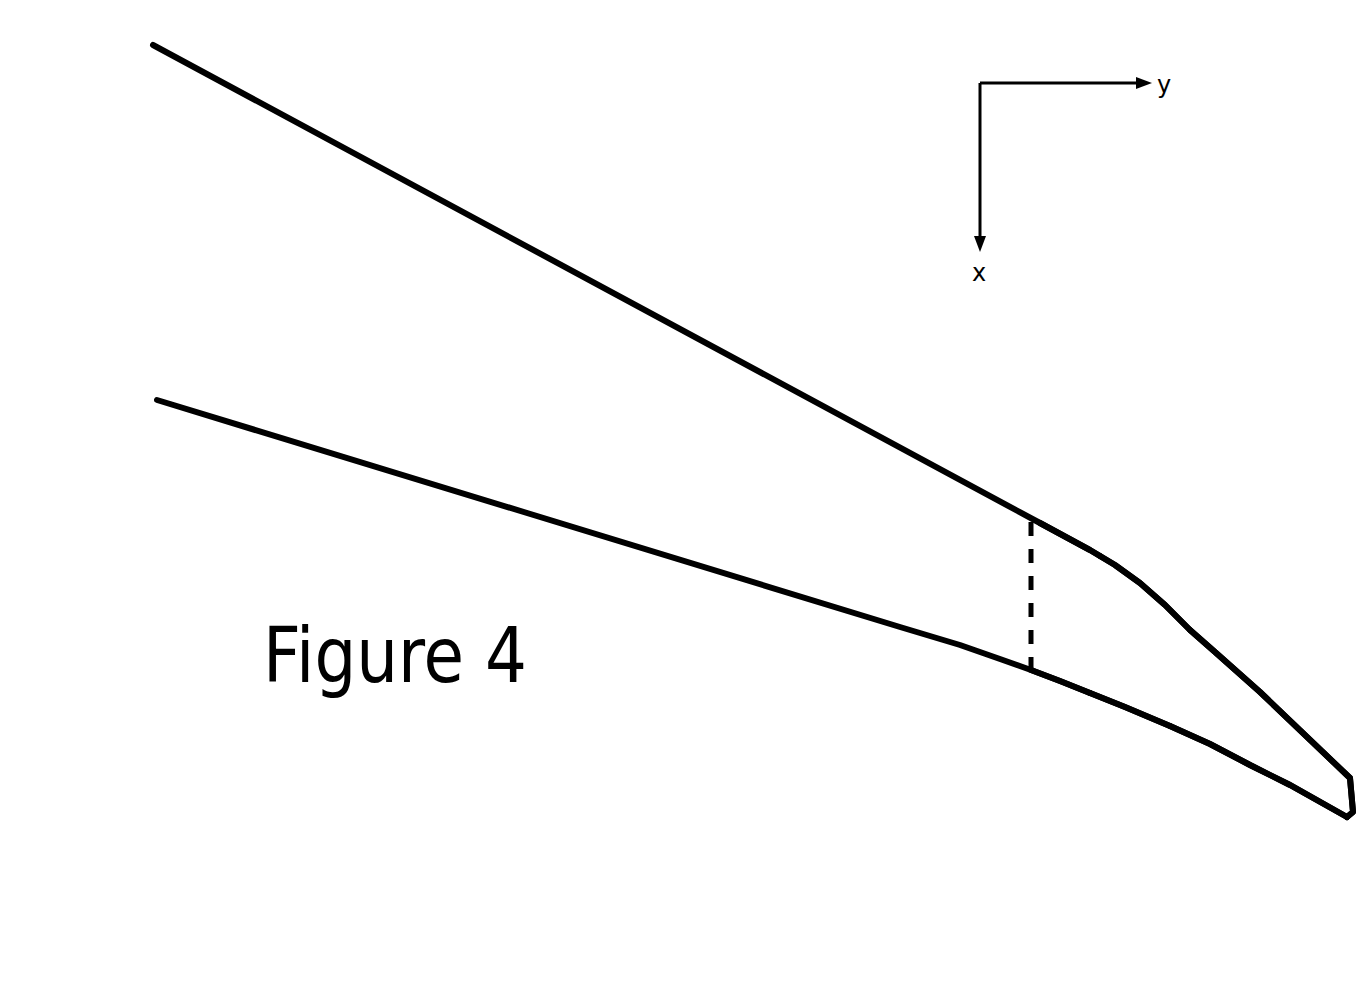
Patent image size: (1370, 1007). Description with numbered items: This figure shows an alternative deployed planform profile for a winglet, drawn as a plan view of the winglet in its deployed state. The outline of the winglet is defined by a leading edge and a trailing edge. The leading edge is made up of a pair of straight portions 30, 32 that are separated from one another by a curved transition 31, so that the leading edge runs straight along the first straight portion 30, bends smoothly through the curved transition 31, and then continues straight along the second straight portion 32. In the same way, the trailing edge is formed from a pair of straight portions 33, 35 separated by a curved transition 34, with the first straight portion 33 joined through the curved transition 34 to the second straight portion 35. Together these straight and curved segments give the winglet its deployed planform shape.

The straight portion 30 is at (1076, 540).
The curved transition 31 is at (1127, 572).
The straight portion 32 is at (1257, 692).
The straight portion 33 is at (1060, 684).
The curved transition 34 is at (1123, 708).
The straight portion 35 is at (1230, 758).